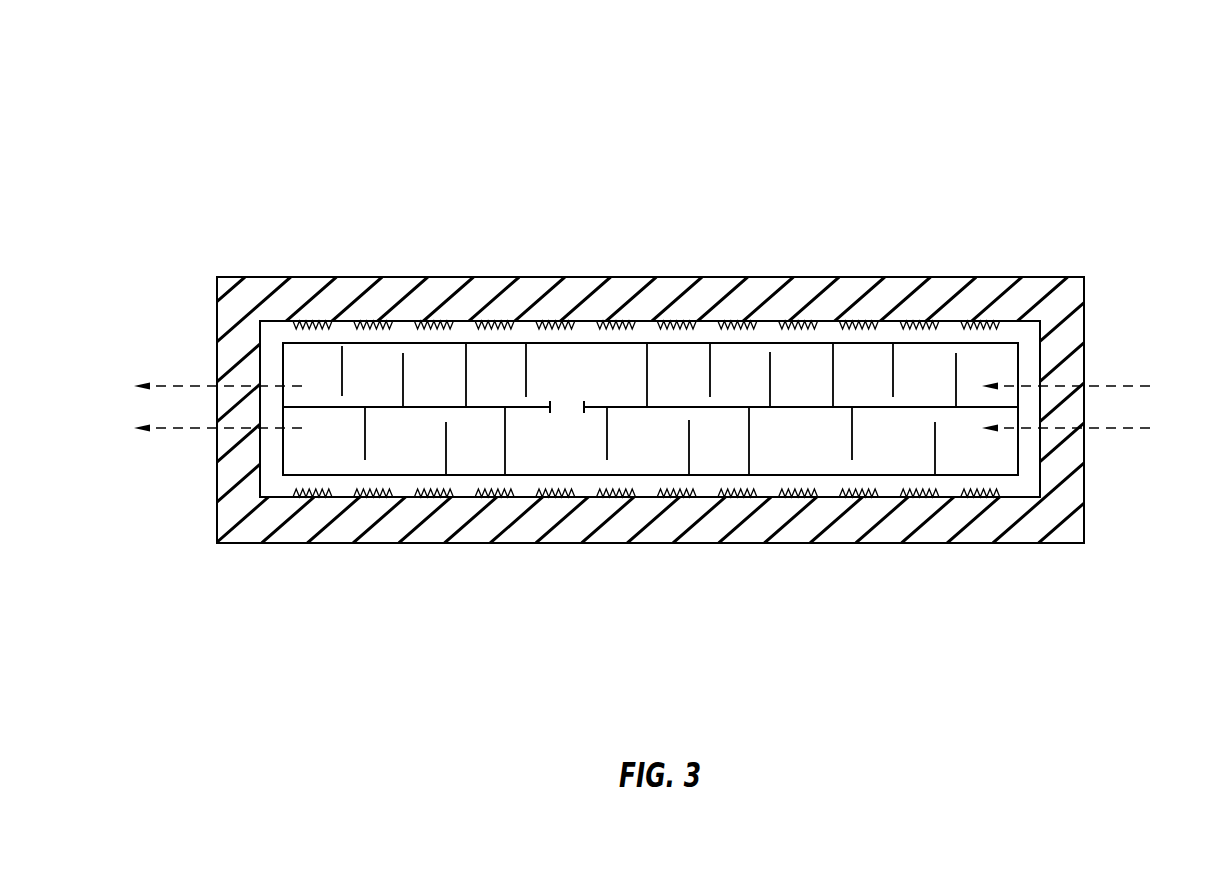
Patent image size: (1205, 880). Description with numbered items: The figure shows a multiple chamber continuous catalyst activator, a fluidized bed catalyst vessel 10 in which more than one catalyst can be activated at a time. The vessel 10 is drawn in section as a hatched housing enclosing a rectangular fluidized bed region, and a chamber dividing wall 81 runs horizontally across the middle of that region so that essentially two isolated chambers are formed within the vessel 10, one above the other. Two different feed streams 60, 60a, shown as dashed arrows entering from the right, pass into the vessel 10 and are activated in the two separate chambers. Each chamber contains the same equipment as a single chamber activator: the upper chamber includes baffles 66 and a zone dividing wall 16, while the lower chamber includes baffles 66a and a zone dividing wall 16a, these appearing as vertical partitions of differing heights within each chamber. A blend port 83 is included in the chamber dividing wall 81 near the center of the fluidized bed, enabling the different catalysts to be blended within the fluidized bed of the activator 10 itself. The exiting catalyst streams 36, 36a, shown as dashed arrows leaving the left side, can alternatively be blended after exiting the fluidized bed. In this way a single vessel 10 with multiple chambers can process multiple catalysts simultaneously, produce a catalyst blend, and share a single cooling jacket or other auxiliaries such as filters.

The fluidized bed catalyst vessel 10 is at (1072, 70).
The zone dividing wall 16 is at (470, 376).
The zone dividing wall 16a is at (507, 447).
The baffle 66 is at (398, 380).
The baffle 66a is at (362, 438).
The blend port 83 is at (565, 405).
The chamber dividing wall 81 is at (907, 405).
The exiting catalyst stream 36 is at (177, 384).
The exiting catalyst stream 36a is at (177, 430).
The feed stream 60 is at (1117, 384).
The feed stream 60a is at (1117, 430).